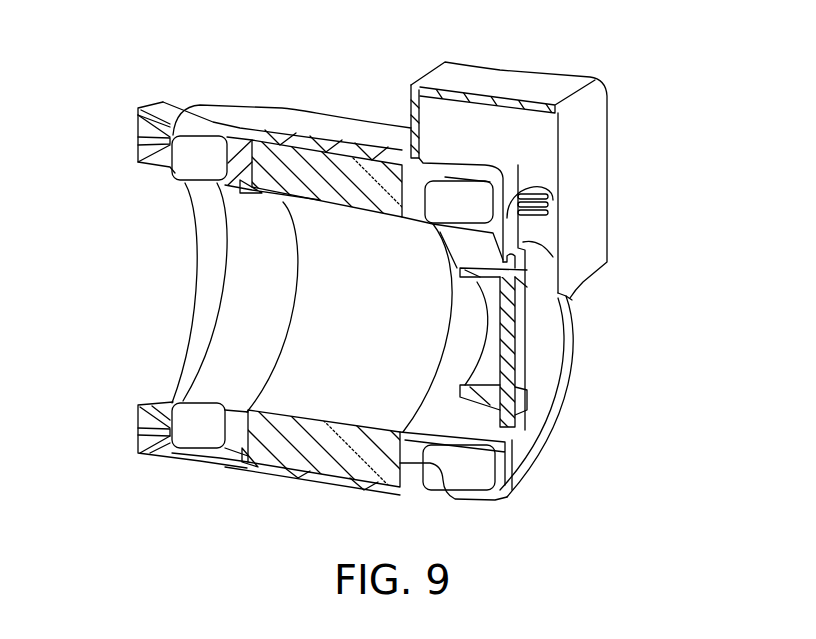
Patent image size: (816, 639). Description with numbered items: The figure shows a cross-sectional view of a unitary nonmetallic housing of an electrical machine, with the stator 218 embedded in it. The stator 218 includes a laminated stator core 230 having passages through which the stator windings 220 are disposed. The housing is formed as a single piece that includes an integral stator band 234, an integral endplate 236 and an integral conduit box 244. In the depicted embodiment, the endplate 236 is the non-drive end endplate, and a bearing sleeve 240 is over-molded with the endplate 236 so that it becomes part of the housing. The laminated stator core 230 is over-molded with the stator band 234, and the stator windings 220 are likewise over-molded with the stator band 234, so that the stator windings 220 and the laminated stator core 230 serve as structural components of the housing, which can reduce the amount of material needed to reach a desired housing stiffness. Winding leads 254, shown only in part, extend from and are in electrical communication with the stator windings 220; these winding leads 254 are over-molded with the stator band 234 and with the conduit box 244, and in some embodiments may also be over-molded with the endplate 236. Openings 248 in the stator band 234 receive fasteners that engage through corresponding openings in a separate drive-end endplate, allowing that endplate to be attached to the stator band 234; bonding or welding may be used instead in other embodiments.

The stator 218 is at (265, 511).
The stator windings 220 is at (200, 150).
The laminated stator core 230 is at (325, 157).
The stator band 234 is at (282, 108).
The endplate 236 is at (537, 440).
The bearing sleeve 240 is at (507, 402).
The conduit box 244 is at (512, 73).
The openings 248 is at (138, 428).
The winding leads 254 is at (558, 183).